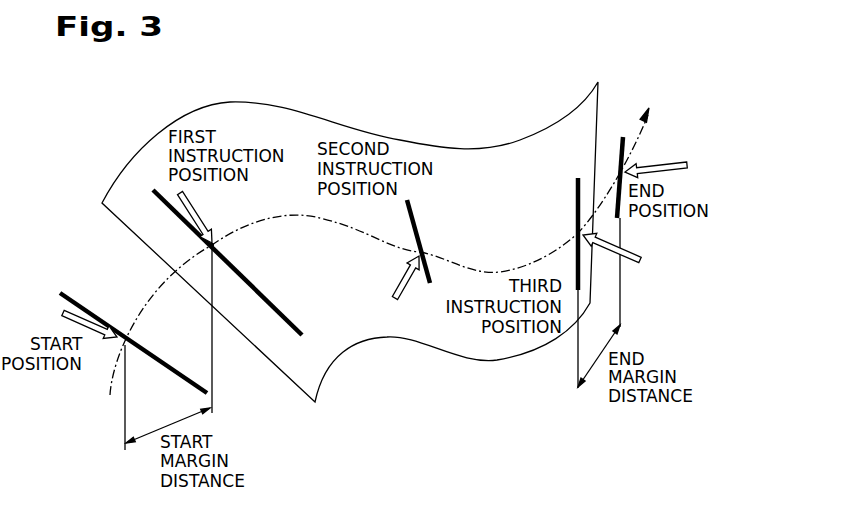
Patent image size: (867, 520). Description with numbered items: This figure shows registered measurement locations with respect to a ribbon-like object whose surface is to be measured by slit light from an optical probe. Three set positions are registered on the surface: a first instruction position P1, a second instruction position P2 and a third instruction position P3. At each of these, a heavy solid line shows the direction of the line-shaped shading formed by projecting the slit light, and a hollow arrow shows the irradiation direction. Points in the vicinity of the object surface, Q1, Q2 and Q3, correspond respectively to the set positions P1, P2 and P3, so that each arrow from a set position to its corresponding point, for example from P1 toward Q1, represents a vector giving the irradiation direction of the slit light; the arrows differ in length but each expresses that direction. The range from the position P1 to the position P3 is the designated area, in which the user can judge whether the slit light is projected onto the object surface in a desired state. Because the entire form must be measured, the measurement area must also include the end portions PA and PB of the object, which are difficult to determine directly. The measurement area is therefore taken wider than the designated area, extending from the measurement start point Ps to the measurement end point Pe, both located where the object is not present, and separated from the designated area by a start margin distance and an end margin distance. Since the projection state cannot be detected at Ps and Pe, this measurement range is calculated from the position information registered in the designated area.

The measurement start point Ps is at (62, 313).
The end portion of the object PA is at (178, 275).
The first instruction position P1 is at (160, 196).
The point corresponding to position P1 Q1 is at (212, 245).
The second instruction position P2 is at (395, 298).
The point corresponding to position P2 Q2 is at (421, 252).
The point corresponding to position P3 Q3 is at (578, 237).
The third instruction position P3 is at (640, 261).
The end portion of the object PB is at (593, 220).
The measurement end point Pe is at (688, 160).